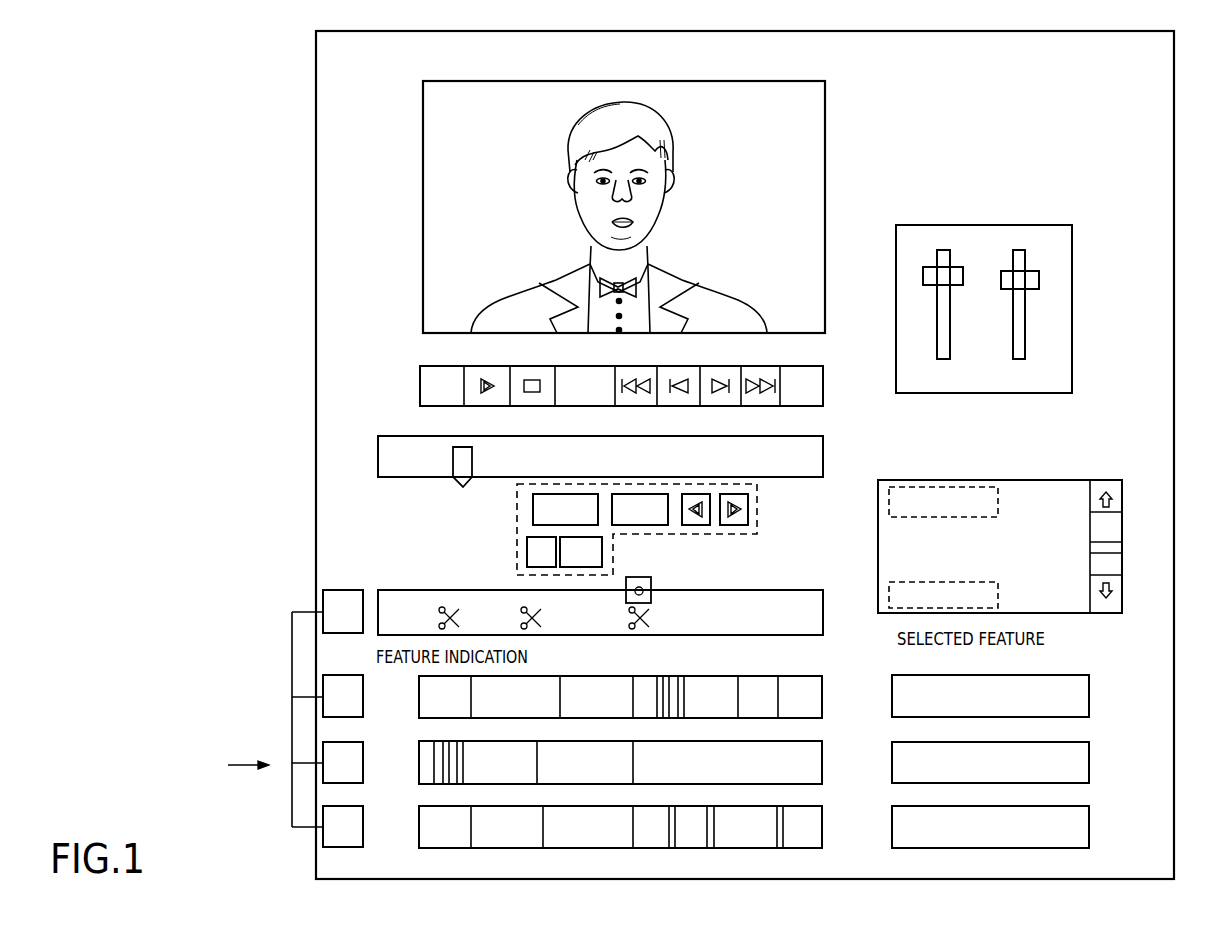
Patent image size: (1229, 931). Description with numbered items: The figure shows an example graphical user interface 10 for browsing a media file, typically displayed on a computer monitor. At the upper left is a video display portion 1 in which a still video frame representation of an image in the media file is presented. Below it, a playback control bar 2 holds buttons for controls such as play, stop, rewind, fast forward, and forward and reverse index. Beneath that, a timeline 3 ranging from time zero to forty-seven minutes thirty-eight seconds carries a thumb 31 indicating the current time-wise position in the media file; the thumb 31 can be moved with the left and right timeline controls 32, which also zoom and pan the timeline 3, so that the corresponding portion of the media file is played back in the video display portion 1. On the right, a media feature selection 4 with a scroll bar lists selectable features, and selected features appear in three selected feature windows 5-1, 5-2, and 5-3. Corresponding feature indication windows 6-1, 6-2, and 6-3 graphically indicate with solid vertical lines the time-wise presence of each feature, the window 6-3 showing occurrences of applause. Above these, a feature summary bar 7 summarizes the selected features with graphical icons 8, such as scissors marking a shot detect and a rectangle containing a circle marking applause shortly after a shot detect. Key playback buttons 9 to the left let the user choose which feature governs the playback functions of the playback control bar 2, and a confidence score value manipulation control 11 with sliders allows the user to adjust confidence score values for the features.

The video display portion 1 is at (665, 81).
The playback control bar 2 is at (420, 378).
The timeline 3 is at (378, 458).
The thumb 31 is at (464, 488).
The timeline controls 32 is at (757, 530).
The media feature selection 4 is at (1122, 519).
The selected feature window 5-1 is at (1090, 690).
The selected feature window 5-2 is at (1090, 757).
The selected feature window 5-3 is at (1090, 820).
The feature indication window 6-1 is at (727, 676).
The feature indication window 6-2 is at (822, 768).
The feature indication window 6-3 is at (822, 828).
The feature summary bar 7 is at (745, 590).
The graphical icon 8 is at (639, 577).
The key playback button 9 is at (335, 847).
The graphical user interface 10 is at (183, 143).
The confidence score value manipulation control 11 is at (1072, 325).